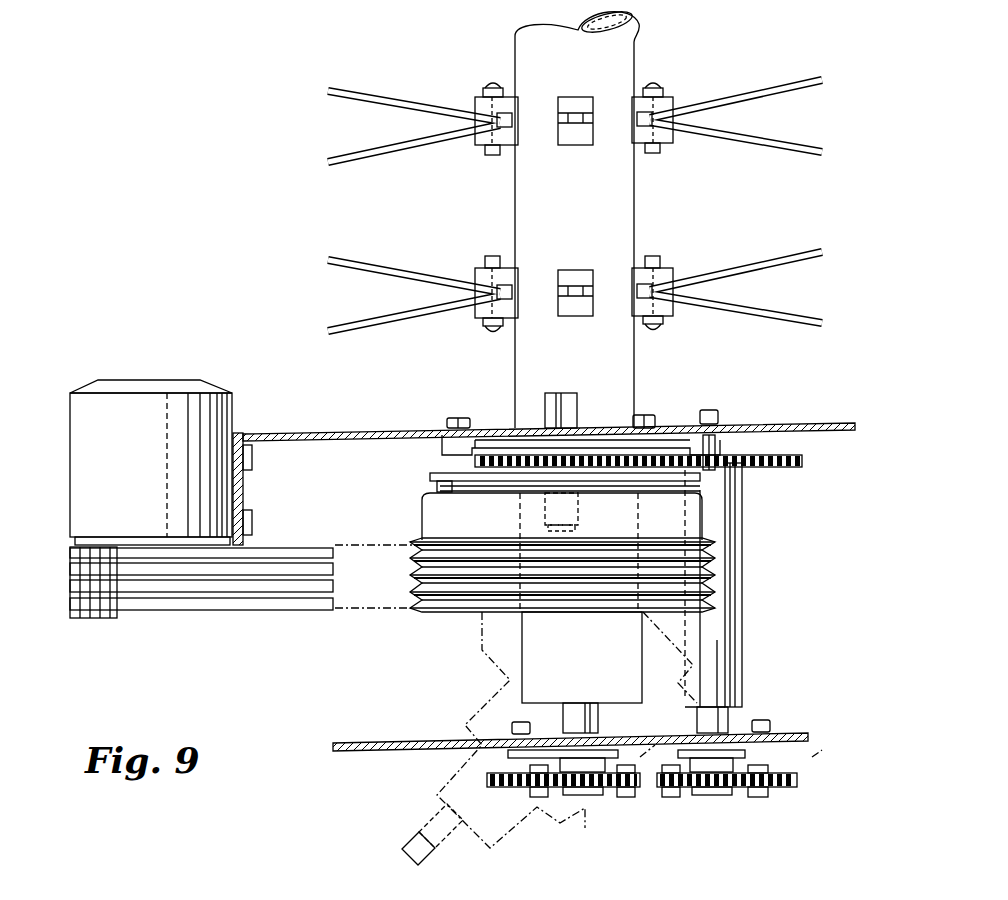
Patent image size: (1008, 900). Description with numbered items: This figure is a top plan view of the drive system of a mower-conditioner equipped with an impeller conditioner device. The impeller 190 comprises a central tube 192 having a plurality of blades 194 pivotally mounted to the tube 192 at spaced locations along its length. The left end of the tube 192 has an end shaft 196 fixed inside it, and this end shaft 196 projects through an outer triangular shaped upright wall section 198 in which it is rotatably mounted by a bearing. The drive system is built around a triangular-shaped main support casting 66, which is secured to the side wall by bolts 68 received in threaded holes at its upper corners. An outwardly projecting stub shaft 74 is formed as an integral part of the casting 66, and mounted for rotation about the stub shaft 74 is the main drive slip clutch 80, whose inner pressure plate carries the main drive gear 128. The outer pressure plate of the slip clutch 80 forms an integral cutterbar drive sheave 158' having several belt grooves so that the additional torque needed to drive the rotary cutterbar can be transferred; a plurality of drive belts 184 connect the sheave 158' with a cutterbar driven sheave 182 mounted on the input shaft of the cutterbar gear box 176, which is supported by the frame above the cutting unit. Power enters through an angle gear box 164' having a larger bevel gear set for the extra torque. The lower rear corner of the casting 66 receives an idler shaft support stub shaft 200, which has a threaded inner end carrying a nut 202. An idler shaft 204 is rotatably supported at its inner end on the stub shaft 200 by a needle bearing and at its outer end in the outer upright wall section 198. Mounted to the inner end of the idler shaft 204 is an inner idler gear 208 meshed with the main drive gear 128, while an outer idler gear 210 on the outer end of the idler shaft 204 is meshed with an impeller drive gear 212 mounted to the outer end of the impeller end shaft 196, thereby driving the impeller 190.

The impeller 190 is at (320, 137).
The central tube 192 is at (512, 203).
The blades 194 is at (422, 95).
The main drive gear 128 is at (513, 425).
The bolts 68 is at (455, 418).
The nut 202 is at (706, 410).
The idler shaft support stub shaft 200 is at (748, 455).
The inner idler gear 208 is at (802, 463).
The main support casting 66 is at (428, 455).
The main drive slip clutch 80 is at (418, 517).
The stub shaft 74 is at (578, 505).
The cutterbar drive sheave 158' is at (613, 575).
The idler shaft 204 is at (745, 630).
The end shaft 196 is at (556, 706).
The outer upright wall section 198 is at (340, 750).
The impeller drive gear 212 is at (487, 782).
The outer idler gear 210 is at (797, 780).
The angle gear box 164' is at (612, 738).
The cutterbar gear box 176 is at (137, 474).
The cutterbar driven sheave 182 is at (117, 615).
The drive belts 184 is at (325, 590).